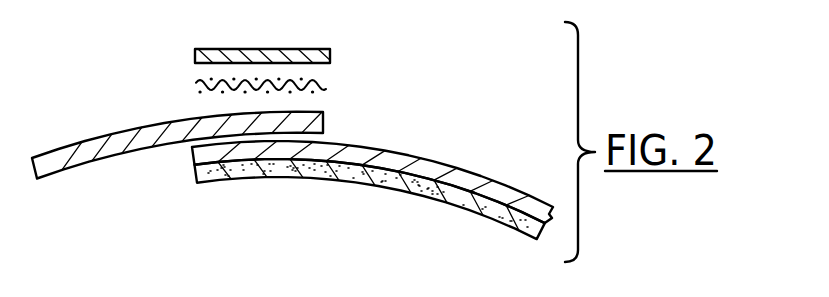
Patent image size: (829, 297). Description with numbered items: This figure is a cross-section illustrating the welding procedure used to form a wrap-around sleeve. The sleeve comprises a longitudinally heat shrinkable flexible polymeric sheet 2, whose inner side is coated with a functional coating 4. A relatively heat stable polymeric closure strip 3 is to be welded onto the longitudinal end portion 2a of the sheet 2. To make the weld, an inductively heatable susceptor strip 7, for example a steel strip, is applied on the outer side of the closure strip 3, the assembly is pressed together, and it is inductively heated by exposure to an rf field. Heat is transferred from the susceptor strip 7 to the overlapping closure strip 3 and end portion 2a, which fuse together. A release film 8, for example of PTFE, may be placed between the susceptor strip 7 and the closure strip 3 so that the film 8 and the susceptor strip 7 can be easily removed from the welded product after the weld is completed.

The heat shrinkable flexible polymeric sheet 2 is at (372, 168).
The end portion 2a is at (394, 158).
The closure strip 3 is at (118, 131).
The functional coating 4 is at (241, 168).
The inductively heatable susceptor strip 7 is at (331, 53).
The release film 8 is at (327, 87).